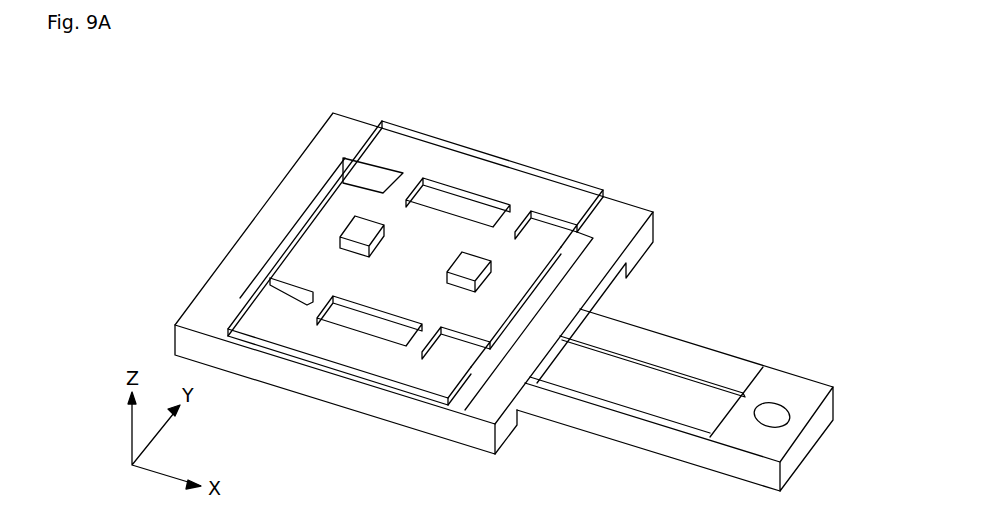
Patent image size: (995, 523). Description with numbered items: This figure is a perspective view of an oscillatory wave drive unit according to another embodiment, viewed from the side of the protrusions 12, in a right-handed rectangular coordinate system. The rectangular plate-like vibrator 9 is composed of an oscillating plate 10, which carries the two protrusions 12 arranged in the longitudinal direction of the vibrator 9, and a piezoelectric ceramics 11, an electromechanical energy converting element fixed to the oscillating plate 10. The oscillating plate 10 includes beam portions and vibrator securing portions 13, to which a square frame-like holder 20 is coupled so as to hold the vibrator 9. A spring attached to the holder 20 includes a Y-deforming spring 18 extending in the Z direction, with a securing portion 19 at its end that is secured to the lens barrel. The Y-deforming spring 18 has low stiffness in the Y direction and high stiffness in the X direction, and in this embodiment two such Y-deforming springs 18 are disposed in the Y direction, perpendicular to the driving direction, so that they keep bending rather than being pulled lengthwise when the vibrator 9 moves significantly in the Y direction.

The vibrator 9 is at (330, 222).
The oscillating plate 10 is at (313, 245).
The piezoelectric ceramics 11 is at (475, 358).
The protrusions 12 is at (465, 262).
The vibrator securing portions 13 is at (512, 178).
The Y-deforming spring 18 is at (718, 370).
The securing portion 19 is at (790, 385).
The holder 20 is at (630, 212).